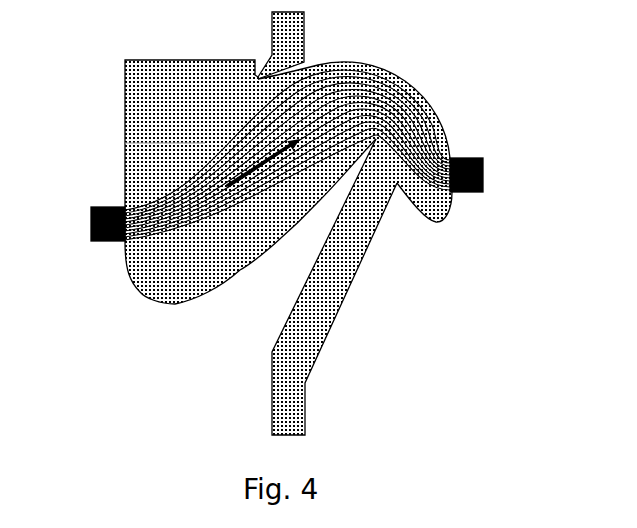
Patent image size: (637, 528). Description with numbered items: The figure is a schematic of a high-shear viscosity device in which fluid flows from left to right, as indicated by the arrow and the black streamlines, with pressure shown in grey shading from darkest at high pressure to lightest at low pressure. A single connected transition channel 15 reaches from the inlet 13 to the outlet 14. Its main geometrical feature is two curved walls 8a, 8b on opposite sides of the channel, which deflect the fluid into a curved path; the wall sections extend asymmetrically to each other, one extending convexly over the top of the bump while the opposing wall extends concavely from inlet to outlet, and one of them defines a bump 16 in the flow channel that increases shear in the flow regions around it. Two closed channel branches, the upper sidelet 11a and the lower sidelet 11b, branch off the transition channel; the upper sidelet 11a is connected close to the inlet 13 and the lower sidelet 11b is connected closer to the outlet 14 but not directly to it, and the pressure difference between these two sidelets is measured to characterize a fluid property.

The curved wall 8a is at (413, 77).
The curved wall 8b is at (256, 264).
The upper sidelet 11a is at (293, 32).
The lower sidelet 11b is at (333, 293).
The inlet 13 is at (88, 217).
The outlet 14 is at (486, 167).
The transition channel 15 is at (181, 274).
The bump 16 is at (389, 134).